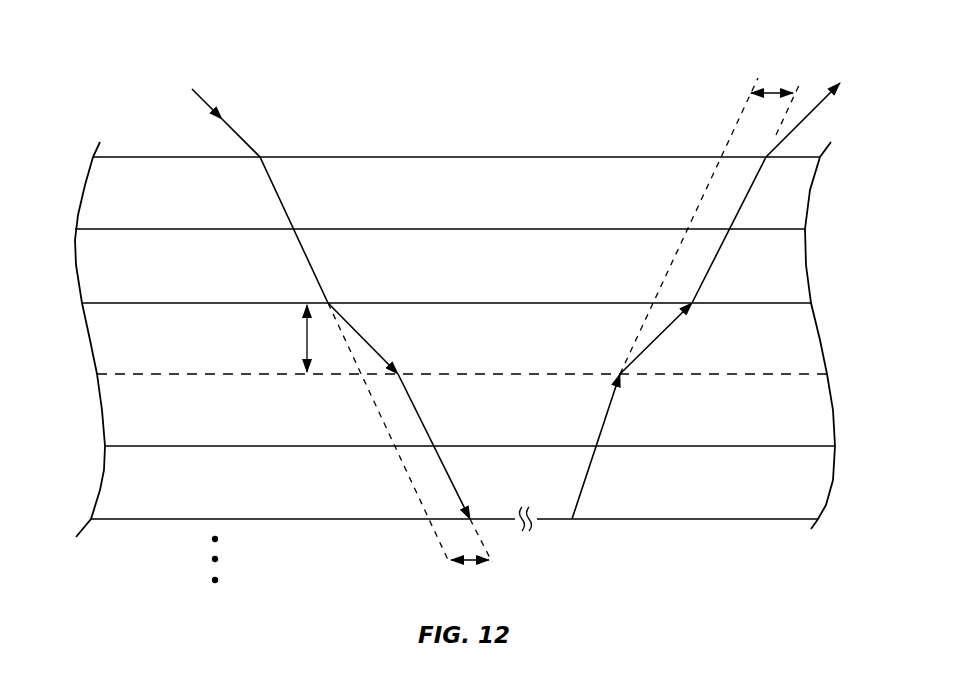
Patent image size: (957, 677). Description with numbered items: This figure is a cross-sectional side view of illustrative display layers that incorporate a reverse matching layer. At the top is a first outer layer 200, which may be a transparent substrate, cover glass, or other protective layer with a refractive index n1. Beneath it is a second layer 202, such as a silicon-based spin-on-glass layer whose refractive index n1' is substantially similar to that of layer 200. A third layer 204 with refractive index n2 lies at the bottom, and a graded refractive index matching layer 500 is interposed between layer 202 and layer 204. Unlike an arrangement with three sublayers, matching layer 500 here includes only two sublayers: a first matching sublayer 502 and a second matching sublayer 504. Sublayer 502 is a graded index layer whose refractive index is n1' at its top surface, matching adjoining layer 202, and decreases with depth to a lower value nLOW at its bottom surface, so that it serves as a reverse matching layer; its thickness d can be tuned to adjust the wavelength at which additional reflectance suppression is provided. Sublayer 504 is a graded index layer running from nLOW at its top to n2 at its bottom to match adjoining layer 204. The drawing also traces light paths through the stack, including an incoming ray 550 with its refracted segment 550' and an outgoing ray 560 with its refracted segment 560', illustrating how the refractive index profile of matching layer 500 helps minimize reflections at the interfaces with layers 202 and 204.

The layer 200 is at (80, 197).
The layer 202 is at (82, 264).
The layer 204 is at (118, 485).
The matching layer 500 is at (67, 303).
The first matching sublayer 502 is at (853, 303).
The second matching sublayer 504 is at (853, 377).
The incident light ray 550 is at (342, 336).
The refracted light ray segment 550' is at (375, 338).
The outgoing light ray 560 is at (706, 296).
The refracted outgoing ray segment 560' is at (670, 338).